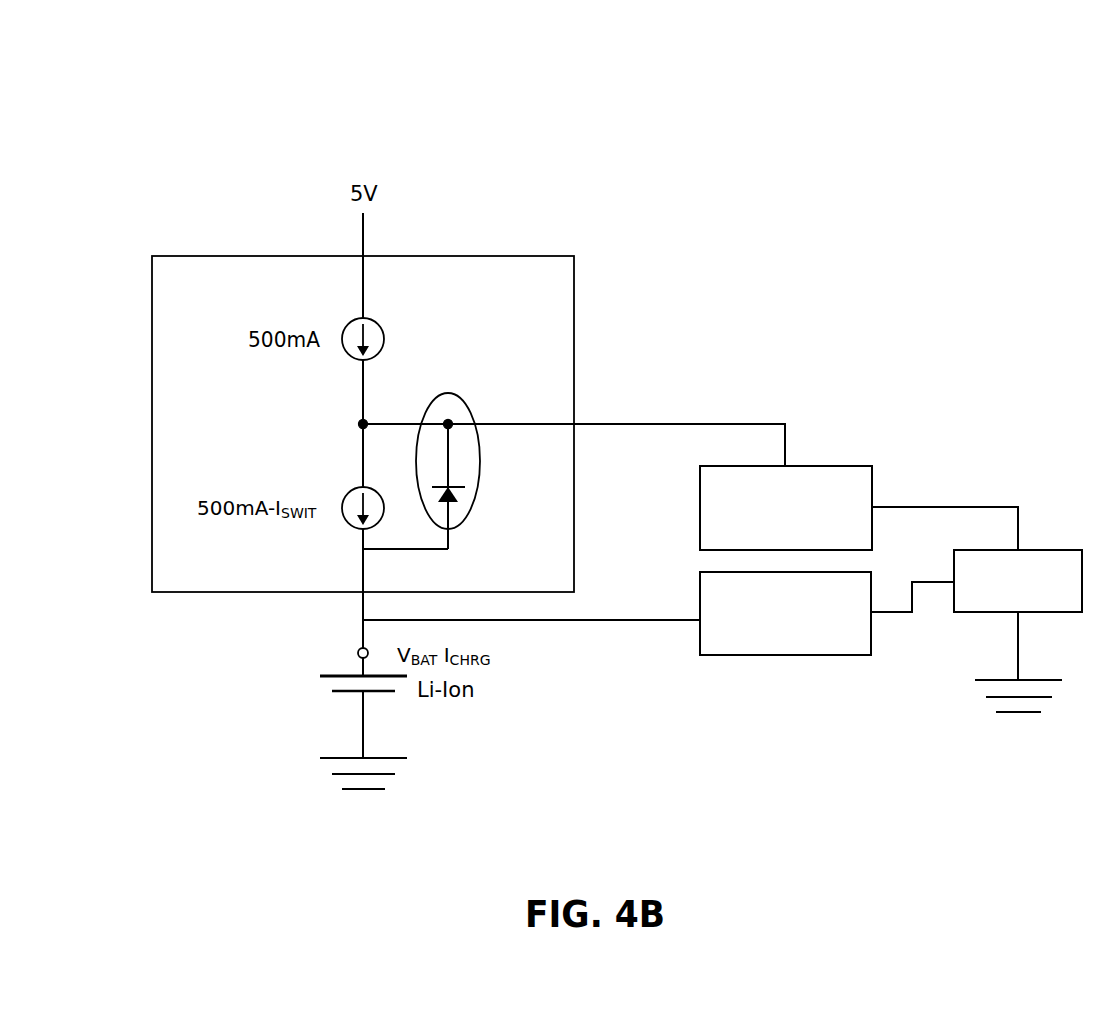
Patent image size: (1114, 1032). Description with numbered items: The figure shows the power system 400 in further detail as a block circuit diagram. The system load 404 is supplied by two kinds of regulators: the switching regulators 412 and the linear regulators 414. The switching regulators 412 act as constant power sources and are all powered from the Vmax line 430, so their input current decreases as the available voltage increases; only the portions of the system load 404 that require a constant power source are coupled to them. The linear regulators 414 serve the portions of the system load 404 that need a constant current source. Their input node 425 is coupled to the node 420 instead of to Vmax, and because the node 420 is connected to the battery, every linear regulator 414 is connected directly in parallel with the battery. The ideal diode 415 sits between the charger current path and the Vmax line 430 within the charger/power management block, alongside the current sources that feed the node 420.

The power system 400 is at (686, 102).
The system load 404 is at (1050, 550).
The switching regulator 412 is at (837, 466).
The linear regulator 414 is at (813, 655).
The ideal diode 415 is at (475, 410).
The node 420 is at (359, 597).
The input node 425 is at (699, 623).
The VMAX output line 430 is at (574, 424).